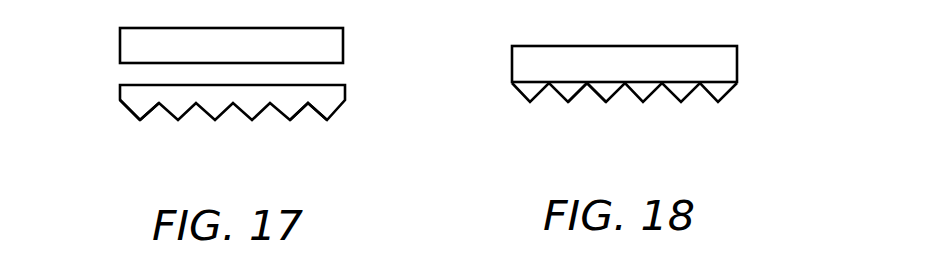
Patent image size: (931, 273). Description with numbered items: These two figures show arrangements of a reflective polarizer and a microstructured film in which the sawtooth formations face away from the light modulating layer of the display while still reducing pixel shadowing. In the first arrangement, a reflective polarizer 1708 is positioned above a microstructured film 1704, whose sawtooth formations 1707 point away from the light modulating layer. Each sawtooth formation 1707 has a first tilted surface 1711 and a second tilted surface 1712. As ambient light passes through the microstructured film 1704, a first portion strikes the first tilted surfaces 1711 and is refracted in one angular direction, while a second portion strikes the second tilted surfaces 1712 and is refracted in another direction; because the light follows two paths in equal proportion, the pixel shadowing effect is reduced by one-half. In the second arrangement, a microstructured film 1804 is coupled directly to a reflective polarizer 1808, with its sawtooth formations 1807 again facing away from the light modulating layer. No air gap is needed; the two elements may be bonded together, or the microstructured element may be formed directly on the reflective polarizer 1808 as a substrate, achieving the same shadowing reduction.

In FIG. 17, the reflective polarizer 1708 is at (345, 43).
In FIG. 17, the microstructured film 1704 is at (346, 97).
In FIG. 17, the first tilted surface 1711 is at (125, 110).
In FIG. 17, the second tilted surface 1712 is at (148, 115).
In FIG. 17, the sawtooth formation 1707 is at (302, 112).
In FIG. 18, the reflective polarizer 1808 is at (738, 63).
In FIG. 18, the microstructured film 1804 is at (728, 90).
In FIG. 18, the sawtooth formation 1807 is at (590, 88).